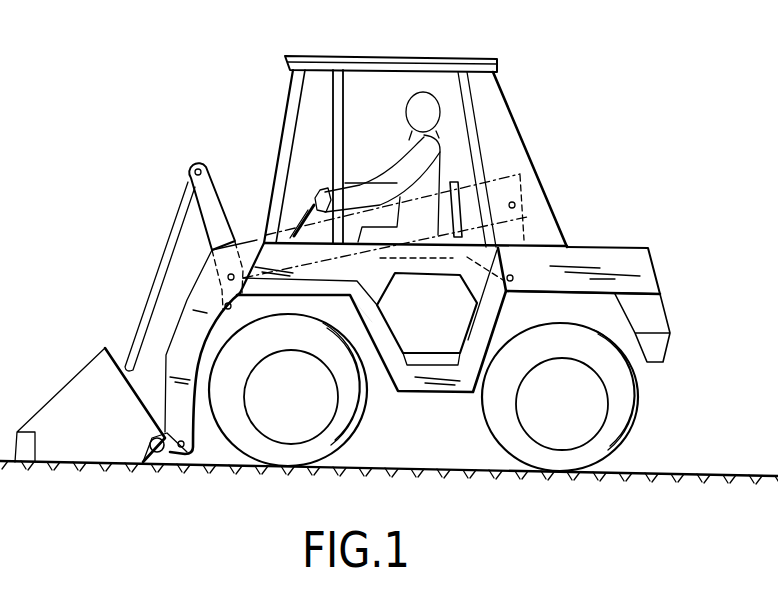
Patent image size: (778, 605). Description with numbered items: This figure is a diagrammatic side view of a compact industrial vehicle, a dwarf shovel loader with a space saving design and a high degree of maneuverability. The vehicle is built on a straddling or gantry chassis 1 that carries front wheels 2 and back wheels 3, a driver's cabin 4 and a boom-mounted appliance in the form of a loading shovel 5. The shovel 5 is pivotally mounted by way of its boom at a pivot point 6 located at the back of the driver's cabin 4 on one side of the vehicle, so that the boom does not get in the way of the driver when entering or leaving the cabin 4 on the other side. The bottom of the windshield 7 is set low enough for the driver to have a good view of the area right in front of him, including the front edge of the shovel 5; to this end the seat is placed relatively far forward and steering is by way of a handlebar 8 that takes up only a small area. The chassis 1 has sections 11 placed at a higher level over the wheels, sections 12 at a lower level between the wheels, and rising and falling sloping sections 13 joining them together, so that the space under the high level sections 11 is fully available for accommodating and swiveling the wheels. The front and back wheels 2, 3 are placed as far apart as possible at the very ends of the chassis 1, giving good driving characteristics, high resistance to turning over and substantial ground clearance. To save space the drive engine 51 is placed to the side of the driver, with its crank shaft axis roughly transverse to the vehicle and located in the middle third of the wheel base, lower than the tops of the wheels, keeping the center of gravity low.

The chassis 1 is at (602, 281).
The front wheels 2 is at (343, 437).
The back wheels 3 is at (633, 440).
The driver's cabin 4 is at (404, 68).
The loading shovel 5 is at (88, 380).
The pivot point 6 is at (516, 202).
The windshield 7 is at (280, 136).
The handlebar 8 is at (312, 185).
The high level chassis sections 11 is at (585, 253).
The low level chassis sections 12 is at (437, 392).
The sloping chassis sections 13 is at (370, 322).
The drive engine 51 is at (467, 313).